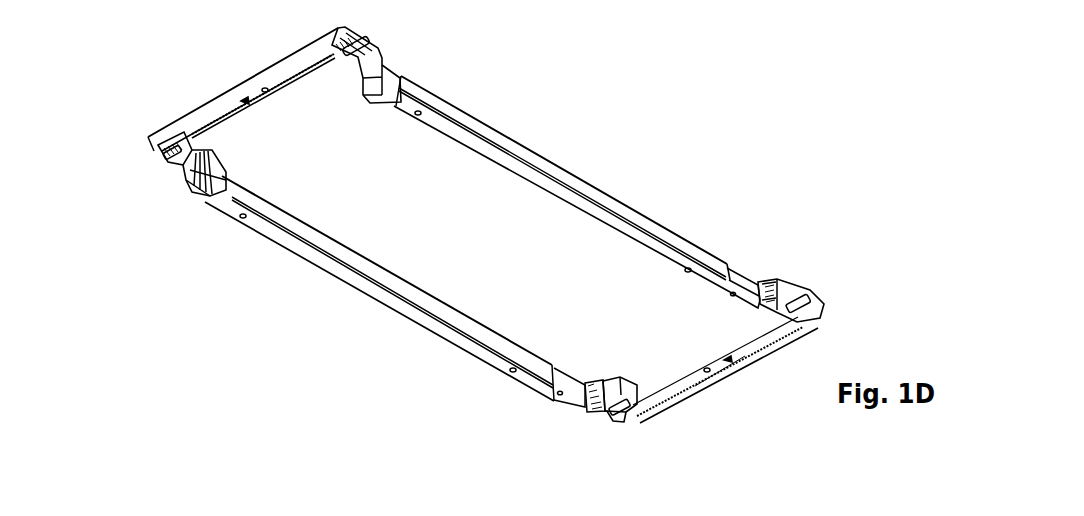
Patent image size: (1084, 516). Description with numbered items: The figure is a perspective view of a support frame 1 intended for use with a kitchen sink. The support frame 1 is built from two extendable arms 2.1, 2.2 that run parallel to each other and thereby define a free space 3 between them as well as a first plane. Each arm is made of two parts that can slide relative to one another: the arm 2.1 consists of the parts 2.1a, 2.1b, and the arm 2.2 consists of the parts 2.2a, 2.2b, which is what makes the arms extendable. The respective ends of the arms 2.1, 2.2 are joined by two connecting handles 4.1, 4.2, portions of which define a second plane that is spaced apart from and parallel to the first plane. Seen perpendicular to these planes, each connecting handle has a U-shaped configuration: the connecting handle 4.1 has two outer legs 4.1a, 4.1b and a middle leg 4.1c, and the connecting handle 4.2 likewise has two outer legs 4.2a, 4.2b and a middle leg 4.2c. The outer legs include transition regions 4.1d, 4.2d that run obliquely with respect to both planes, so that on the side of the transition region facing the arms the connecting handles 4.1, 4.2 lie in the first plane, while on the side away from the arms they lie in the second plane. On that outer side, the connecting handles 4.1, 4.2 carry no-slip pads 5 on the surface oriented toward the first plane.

The support frame 1 is at (493, 233).
The extendable arm 2.1 is at (584, 191).
The part of extendable arm 2.1a is at (560, 200).
The part of extendable arm 2.1b is at (742, 274).
The extendable arm 2.2 is at (402, 291).
The part of extendable arm 2.2a is at (385, 278).
The part of extendable arm 2.2b is at (562, 376).
The free space 3 is at (453, 182).
The connecting handle 4.1 is at (319, 137).
The outer leg 4.1a is at (412, 54).
The outer leg 4.1b is at (195, 201).
The middle leg 4.1c is at (271, 92).
The transition region 4.1d is at (382, 65).
The connecting handle 4.2 is at (707, 338).
The outer leg 4.2a is at (805, 285).
The outer leg 4.2b is at (683, 336).
The middle leg 4.2c is at (744, 342).
The transition region 4.2d is at (589, 384).
The no-slip pad 5 is at (339, 47).